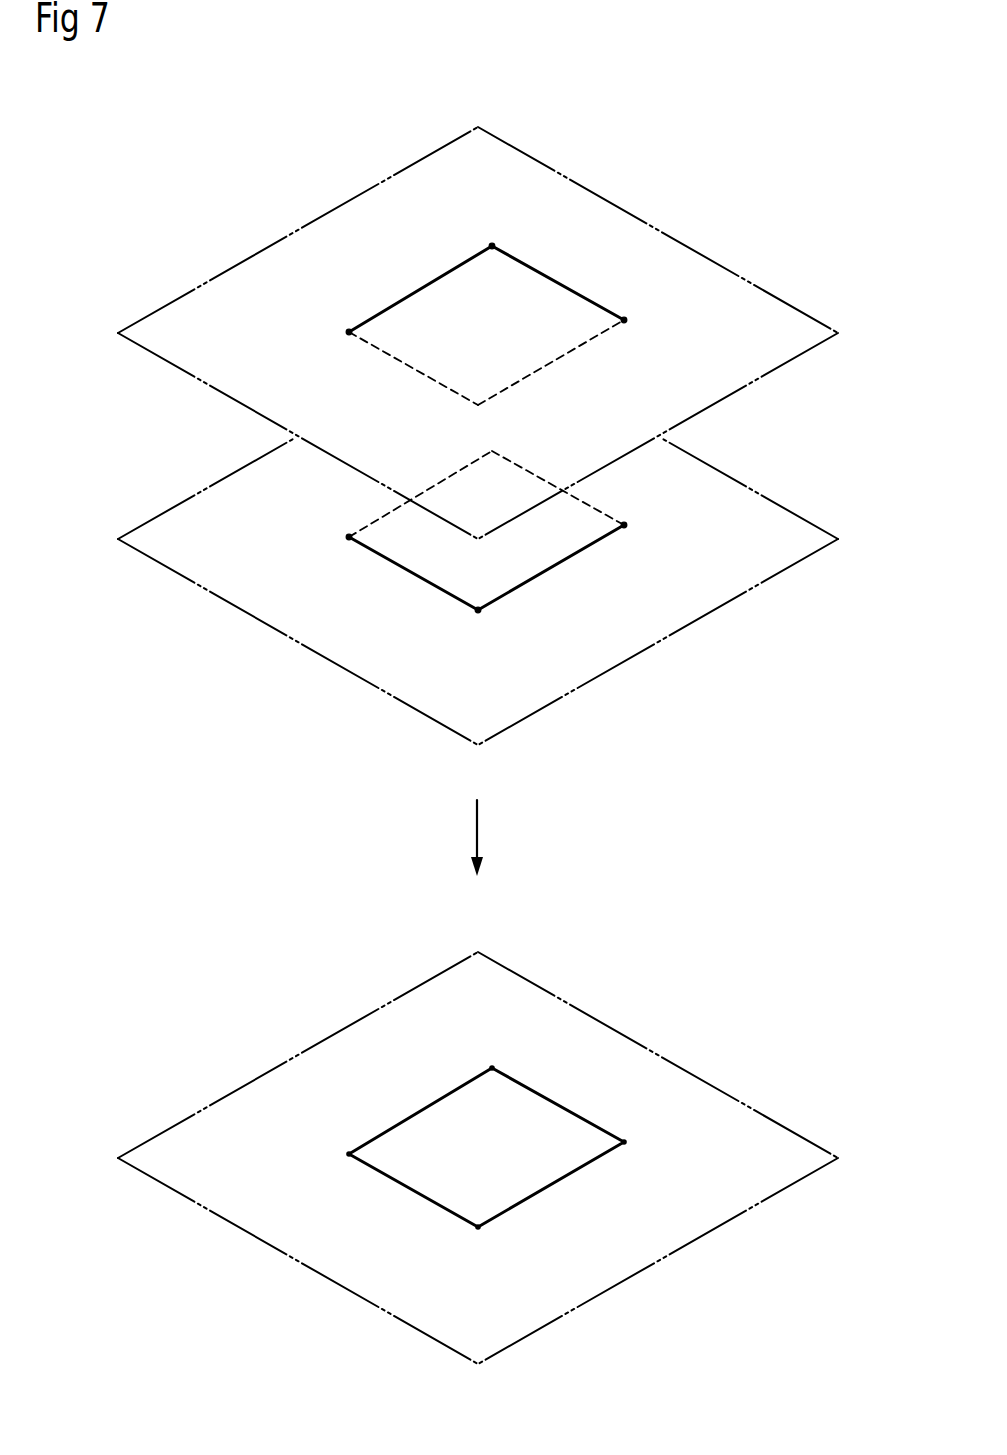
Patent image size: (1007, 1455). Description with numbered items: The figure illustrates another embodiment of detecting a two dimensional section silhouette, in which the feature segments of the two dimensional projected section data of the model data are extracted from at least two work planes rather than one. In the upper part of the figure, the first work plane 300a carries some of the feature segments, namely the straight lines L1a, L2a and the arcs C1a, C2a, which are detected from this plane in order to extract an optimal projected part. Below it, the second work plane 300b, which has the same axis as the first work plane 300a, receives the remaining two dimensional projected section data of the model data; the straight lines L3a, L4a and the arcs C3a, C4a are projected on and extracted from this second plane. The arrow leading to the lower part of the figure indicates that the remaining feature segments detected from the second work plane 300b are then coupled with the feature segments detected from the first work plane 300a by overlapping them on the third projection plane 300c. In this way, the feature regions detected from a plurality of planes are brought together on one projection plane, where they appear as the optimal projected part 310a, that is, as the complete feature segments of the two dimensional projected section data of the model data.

The first work plane 300a is at (657, 228).
The second work plane 300b is at (770, 498).
The third projection plane 300c is at (655, 1050).
The optimal projected part 310a is at (464, 1139).
The straight line L1a is at (565, 282).
The straight line L2a is at (418, 285).
The straight line L3a is at (407, 577).
The straight line L4a is at (557, 568).
The arc C1a is at (492, 245).
The arc C2a is at (350, 332).
The arc C3a is at (477, 612).
The arc C4a is at (626, 525).